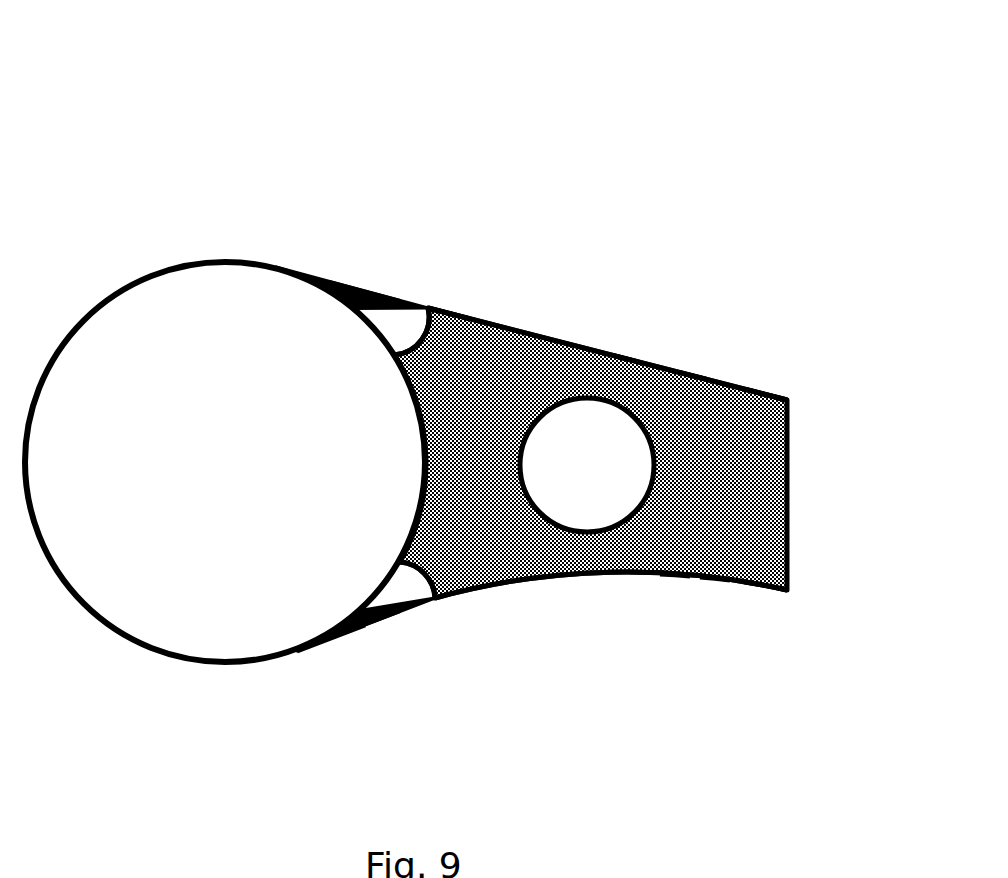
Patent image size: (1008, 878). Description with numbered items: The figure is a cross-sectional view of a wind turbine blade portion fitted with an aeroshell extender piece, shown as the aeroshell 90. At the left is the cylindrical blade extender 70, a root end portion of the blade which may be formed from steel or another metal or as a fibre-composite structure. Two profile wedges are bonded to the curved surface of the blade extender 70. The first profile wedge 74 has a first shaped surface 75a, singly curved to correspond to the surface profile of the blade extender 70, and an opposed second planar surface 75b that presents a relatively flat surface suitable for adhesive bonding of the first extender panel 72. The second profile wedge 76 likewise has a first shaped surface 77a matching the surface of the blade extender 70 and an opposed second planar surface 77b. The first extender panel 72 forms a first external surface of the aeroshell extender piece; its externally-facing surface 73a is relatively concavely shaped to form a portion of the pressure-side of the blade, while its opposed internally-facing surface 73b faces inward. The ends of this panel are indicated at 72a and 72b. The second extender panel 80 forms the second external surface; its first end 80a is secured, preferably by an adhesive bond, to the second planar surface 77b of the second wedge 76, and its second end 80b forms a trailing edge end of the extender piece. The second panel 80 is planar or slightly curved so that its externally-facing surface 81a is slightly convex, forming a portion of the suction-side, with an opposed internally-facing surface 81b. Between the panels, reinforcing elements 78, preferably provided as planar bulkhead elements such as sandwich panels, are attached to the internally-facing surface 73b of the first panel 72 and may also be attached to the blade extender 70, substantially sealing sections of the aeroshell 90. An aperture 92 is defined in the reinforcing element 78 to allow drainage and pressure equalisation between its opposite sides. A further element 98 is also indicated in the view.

The aeroshell 90 is at (671, 128).
The cylindrical blade extender 70 is at (118, 296).
The first extender panel 72 is at (526, 588).
The first end of bottom surface 72a is at (326, 683).
The second end of bottom surface 72b is at (760, 626).
The externally-facing surface 73a is at (714, 583).
The internally-facing surface 73b is at (675, 578).
The first profile wedge 74 is at (388, 624).
The first shaped surface 75a is at (318, 603).
The second planar surface 75b is at (365, 670).
The second profile wedge 76 is at (340, 290).
The first shaped surface 77a is at (305, 319).
The second planar surface 77b is at (373, 256).
The reinforcing elements 78 is at (733, 507).
The second extender panel 80 is at (550, 337).
The first end 80a is at (403, 272).
The second end 80b is at (771, 351).
The externally-facing surface 81a is at (693, 370).
The internally-facing surface 81b is at (625, 353).
The apertures 92 is at (605, 482).
The support 98 is at (260, 865).